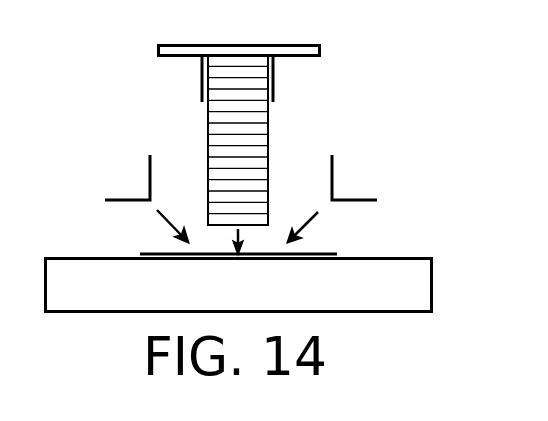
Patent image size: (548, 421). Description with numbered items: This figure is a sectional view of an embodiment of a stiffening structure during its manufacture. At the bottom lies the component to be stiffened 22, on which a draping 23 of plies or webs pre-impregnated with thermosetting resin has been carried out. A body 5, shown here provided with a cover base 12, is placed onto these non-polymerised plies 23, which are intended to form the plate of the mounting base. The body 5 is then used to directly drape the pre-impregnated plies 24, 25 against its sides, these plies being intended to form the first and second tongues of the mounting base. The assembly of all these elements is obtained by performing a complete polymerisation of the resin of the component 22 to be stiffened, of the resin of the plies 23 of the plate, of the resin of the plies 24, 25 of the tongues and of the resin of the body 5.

The cover base 12 is at (293, 63).
The body 5 is at (267, 138).
The pre-impregnated ply 24 is at (148, 172).
The pre-impregnated ply 25 is at (335, 172).
The draping of plies 23 is at (320, 253).
The component to be stiffened 22 is at (98, 266).